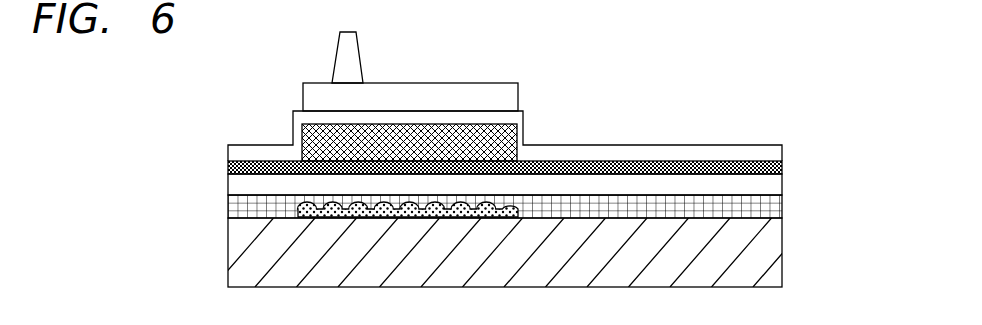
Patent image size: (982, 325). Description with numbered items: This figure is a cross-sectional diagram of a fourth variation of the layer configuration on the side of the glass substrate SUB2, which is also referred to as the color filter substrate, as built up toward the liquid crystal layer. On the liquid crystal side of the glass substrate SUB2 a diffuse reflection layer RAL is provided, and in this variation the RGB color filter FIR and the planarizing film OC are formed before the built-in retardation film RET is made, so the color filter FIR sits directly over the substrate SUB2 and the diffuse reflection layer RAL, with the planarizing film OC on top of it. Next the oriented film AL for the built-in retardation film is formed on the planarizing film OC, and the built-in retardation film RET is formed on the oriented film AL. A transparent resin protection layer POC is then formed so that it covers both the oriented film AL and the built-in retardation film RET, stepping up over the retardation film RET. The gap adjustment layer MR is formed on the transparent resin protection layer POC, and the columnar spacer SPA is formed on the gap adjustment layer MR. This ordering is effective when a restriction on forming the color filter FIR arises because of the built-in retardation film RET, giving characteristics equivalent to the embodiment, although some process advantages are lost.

The glass substrate SUB2 is at (778, 248).
The RGB color filter FIR is at (245, 207).
The diffuse reflection layer RAL is at (330, 220).
The planarizing film OC is at (240, 185).
The oriented film AL is at (240, 167).
The transparent resin protection layer POC is at (257, 152).
The built-in retardation film RET is at (320, 123).
The gap adjustment layer MR is at (497, 92).
The columnar spacer SPA is at (350, 53).